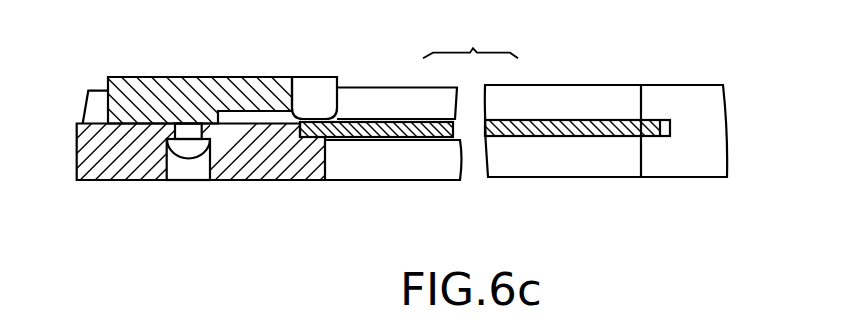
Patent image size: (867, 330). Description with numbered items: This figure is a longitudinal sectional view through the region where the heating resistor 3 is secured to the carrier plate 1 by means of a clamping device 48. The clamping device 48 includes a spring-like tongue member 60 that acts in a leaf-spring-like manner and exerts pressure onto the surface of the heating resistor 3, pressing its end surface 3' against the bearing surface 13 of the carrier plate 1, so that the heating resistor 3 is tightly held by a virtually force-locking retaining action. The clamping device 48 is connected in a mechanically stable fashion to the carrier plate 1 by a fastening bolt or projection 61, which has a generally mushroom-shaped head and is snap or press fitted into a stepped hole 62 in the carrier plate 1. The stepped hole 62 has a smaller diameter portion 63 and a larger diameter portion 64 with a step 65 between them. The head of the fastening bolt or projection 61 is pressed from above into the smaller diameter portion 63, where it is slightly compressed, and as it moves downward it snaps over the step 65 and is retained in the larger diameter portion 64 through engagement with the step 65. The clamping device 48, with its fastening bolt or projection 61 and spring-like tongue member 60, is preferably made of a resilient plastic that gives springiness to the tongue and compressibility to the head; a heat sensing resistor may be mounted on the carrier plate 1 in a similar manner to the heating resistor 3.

The carrier plate 1 is at (93, 180).
The bearing surface 13 is at (307, 140).
The clamping device 48 is at (165, 77).
The spring-like tongue member 60 is at (324, 83).
The fastening bolt or projection 61 is at (197, 162).
The stepped hole 62 is at (215, 178).
The smaller diameter portion 63 is at (150, 90).
The larger diameter portion 64 is at (168, 181).
The step 65 is at (189, 131).
The end surface 3' is at (373, 90).
The heating resistor 3 is at (598, 109).